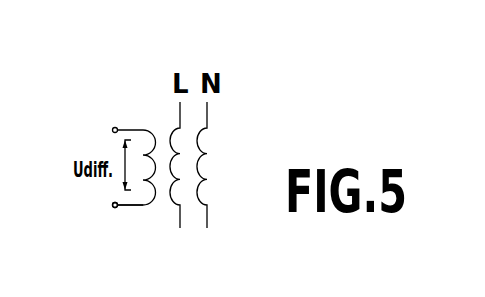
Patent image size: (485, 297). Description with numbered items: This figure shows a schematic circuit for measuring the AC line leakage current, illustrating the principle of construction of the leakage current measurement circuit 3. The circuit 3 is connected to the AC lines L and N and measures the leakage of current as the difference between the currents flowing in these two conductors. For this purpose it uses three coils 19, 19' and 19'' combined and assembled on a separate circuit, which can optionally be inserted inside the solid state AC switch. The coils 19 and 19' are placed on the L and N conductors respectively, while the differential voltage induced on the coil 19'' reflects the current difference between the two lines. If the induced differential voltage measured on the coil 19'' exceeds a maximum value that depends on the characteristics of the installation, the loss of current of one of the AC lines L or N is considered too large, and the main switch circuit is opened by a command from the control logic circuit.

The leakage current measurement circuit 3 is at (136, 92).
The coil 19 is at (216, 185).
The coil 19' is at (256, 165).
The coil 19'' is at (90, 228).